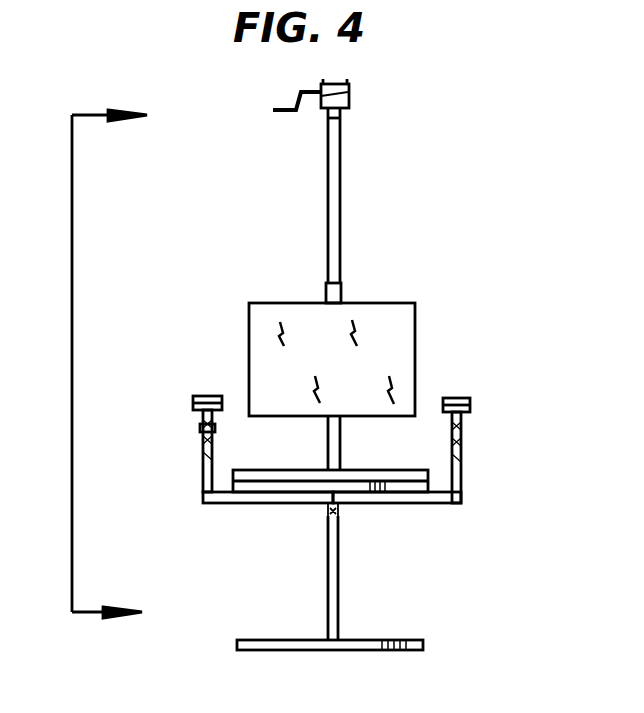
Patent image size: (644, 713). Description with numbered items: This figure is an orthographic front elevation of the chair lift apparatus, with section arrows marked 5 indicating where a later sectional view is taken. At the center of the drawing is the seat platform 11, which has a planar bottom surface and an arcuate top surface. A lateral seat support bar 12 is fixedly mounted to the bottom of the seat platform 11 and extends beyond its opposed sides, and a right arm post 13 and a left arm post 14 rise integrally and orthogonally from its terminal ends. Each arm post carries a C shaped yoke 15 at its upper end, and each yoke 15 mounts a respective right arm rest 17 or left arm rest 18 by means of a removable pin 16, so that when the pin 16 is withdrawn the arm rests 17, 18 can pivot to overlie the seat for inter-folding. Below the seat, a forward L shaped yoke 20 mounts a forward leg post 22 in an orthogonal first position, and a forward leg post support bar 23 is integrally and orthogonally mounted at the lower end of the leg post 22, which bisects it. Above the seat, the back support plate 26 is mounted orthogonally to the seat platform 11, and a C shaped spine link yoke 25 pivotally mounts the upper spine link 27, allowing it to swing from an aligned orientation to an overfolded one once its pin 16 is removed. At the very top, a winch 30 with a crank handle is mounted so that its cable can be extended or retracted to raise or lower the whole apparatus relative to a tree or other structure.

The section line of FIG. 5 is at (86, 364).
The seat platform 11 is at (396, 470).
The lateral seat support bar 12 is at (445, 505).
The right arm post 13 is at (203, 488).
The left arm post 14 is at (462, 468).
The C shaped yoke 15 is at (215, 430).
The removable pin 16 is at (200, 428).
The right arm rest 17 is at (195, 404).
The left arm rest 18 is at (468, 410).
The forward L shaped yoke 20 is at (338, 512).
The forward leg post 22 is at (338, 572).
The forward leg post support bar 23 is at (385, 638).
The C shaped spine link yoke 25 is at (341, 287).
The back support plate 26 is at (394, 323).
The upper spine link 27 is at (341, 216).
The winch 30 is at (347, 95).